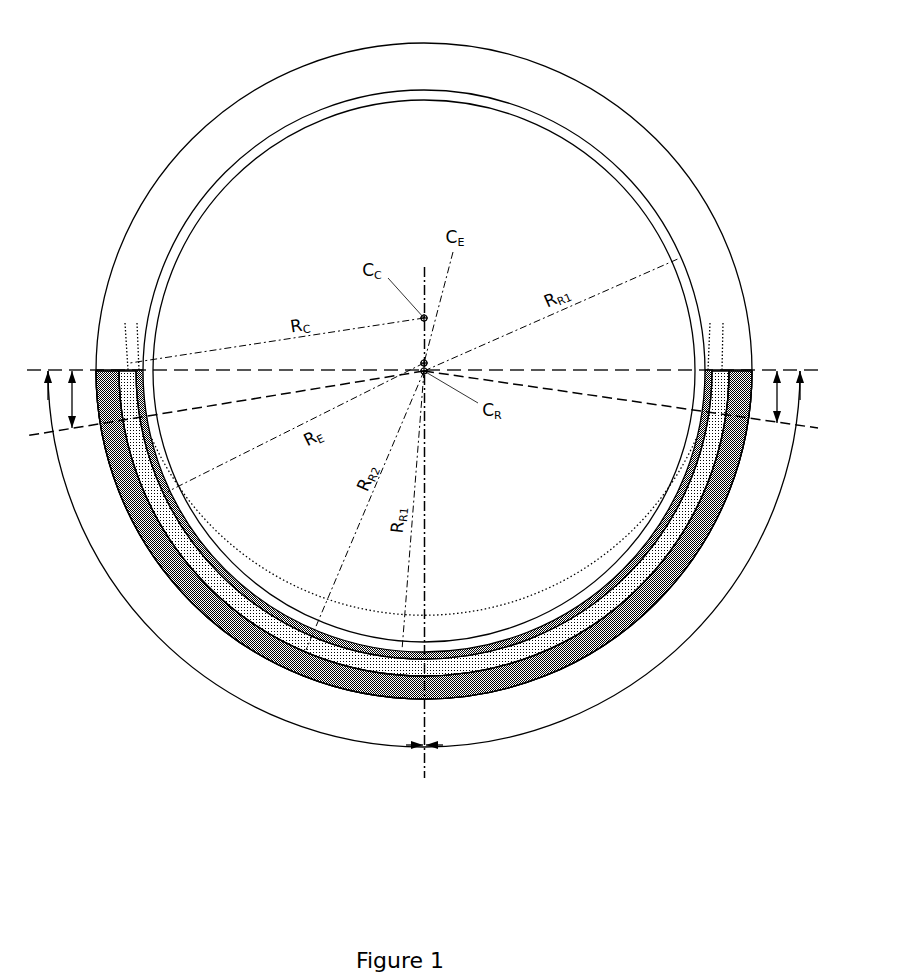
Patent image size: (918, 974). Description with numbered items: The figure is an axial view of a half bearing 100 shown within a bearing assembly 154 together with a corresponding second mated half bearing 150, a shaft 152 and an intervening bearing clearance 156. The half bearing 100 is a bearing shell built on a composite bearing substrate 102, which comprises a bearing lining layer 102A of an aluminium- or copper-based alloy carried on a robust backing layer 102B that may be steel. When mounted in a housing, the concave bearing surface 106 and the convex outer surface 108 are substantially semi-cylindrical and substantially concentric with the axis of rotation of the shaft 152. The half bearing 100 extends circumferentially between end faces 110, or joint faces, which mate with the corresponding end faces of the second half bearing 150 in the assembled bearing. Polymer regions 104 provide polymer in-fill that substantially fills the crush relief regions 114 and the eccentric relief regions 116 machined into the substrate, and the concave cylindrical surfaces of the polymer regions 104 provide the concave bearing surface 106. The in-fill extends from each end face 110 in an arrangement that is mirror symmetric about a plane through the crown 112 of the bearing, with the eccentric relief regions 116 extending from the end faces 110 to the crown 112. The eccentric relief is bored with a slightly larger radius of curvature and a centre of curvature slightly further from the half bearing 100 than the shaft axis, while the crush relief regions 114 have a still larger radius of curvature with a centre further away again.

The half bearing 100 is at (83, 735).
The composite bearing substrate 102 is at (442, 565).
The bearing lining layer 102A is at (600, 603).
The backing layer 102B is at (580, 653).
The polymer regions 104 is at (143, 388).
The concave bearing surface 106 is at (677, 492).
The convex outer surface 108 is at (325, 688).
The end faces 110 is at (108, 368).
The crown 112 is at (423, 652).
The crush relief regions 114 is at (73, 405).
The eccentric relief regions 116 is at (141, 622).
The second mated half bearing 150 is at (628, 112).
The shaft 152 is at (625, 187).
The bearing assembly 154 is at (95, 53).
The bearing clearance 156 is at (185, 233).